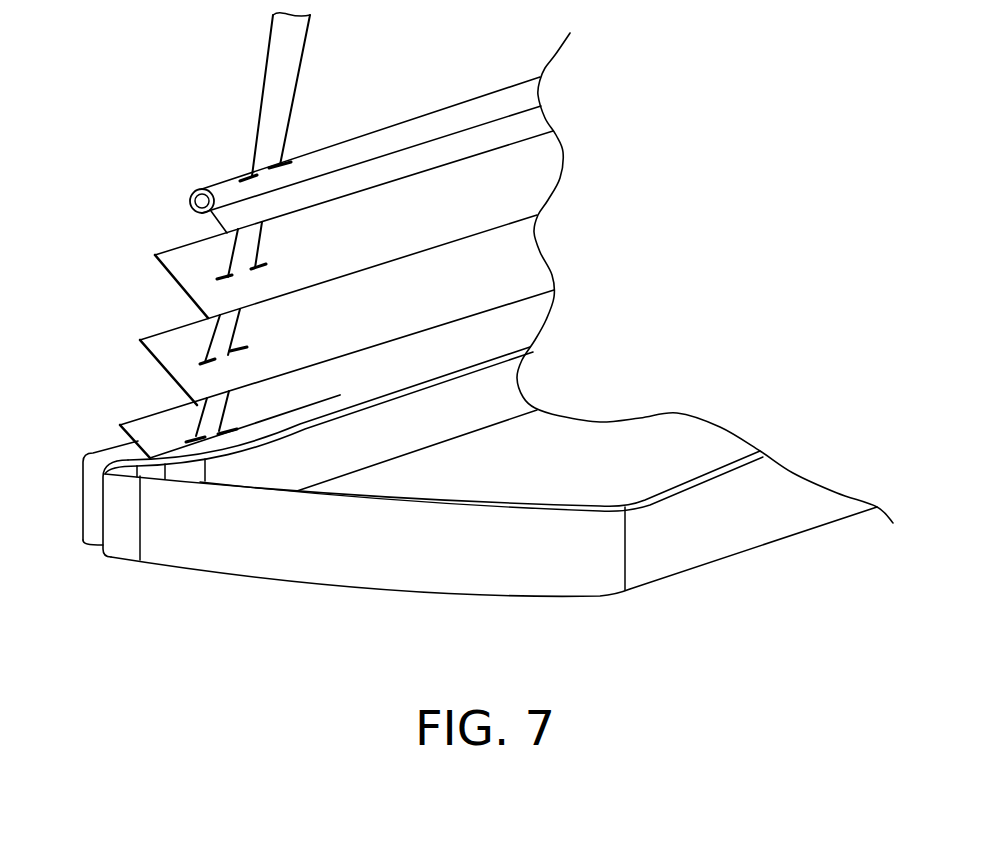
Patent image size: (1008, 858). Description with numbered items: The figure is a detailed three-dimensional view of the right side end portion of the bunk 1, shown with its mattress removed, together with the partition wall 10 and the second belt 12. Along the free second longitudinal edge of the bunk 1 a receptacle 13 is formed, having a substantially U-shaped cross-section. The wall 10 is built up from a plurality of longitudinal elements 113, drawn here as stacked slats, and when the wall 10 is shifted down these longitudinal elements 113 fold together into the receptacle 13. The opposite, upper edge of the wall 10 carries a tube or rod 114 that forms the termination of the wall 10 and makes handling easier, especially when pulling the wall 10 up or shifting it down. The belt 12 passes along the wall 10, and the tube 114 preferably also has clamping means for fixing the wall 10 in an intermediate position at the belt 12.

The bunk 1 is at (555, 474).
The wall 10 is at (565, 225).
The second belt 12 is at (280, 83).
The receptacle 13 is at (108, 444).
The longitudinal elements 113 is at (157, 412).
The tube or rod 114 is at (203, 202).